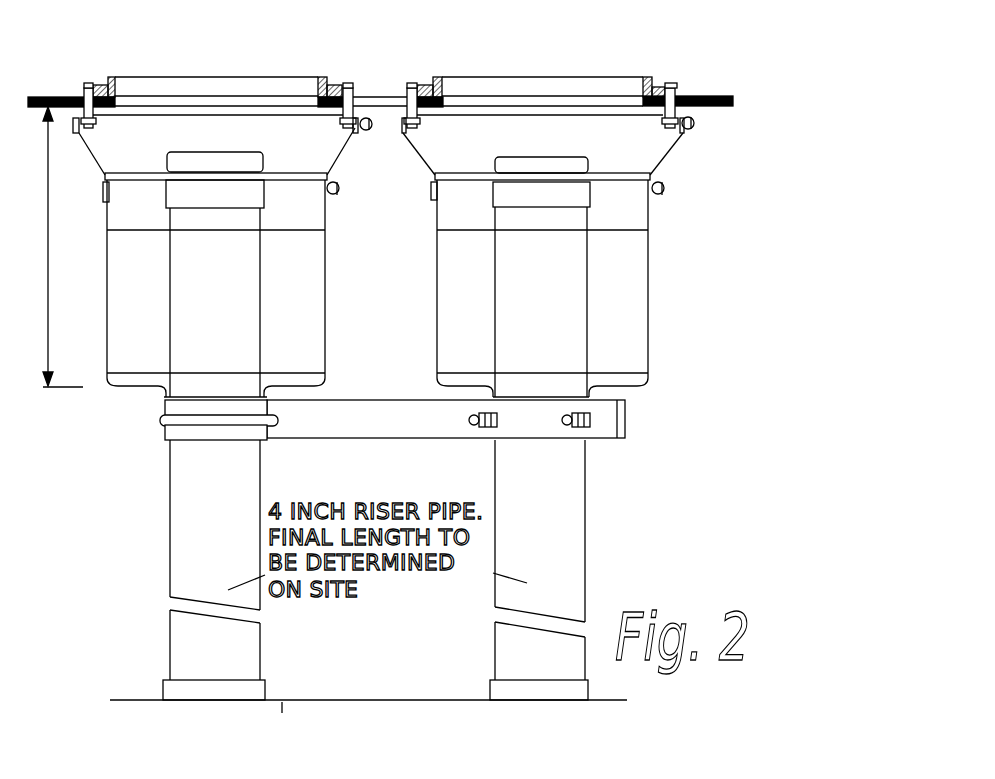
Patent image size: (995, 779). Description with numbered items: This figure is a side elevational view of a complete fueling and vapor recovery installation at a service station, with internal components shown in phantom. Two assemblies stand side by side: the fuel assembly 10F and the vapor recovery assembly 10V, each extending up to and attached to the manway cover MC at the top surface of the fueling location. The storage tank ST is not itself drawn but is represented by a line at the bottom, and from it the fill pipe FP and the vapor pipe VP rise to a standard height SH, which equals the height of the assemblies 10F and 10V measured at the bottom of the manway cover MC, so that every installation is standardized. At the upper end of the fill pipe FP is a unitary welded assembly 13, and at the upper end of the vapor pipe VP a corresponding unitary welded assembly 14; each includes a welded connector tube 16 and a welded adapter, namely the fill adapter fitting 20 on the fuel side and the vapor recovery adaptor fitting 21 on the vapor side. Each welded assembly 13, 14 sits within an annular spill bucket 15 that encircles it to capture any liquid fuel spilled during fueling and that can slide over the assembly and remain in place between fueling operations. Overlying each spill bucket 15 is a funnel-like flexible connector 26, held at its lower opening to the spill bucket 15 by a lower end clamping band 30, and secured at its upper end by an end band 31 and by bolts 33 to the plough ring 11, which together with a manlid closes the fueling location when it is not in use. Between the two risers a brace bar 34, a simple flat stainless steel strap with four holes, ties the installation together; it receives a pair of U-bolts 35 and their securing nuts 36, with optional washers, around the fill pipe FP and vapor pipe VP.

The fuel assembly 10F is at (325, 266).
The vapor recovery assembly 10V is at (433, 298).
The plough ring 11 is at (342, 89).
The unitary welded assembly 13 is at (263, 318).
The unitary welded assembly 14 is at (610, 283).
The spill bucket 15 is at (325, 333).
The welded connector tube 16 is at (168, 297).
The fill adapter fitting 20 is at (167, 160).
The vapor recovery adaptor fitting 21 is at (495, 163).
The flexible connector 26 is at (92, 160).
The lower end clamping band 30 is at (340, 190).
The end band 31 is at (375, 131).
The bolt 33 is at (86, 97).
The brace bar 34 is at (372, 417).
The U-bolt 35 is at (471, 422).
The securing nut 36 is at (490, 428).
The manway cover MC is at (448, 141).
The standard height SH is at (58, 247).
The fill pipe FP is at (168, 548).
The vapor pipe VP is at (585, 587).
The storage tank ST is at (405, 700).